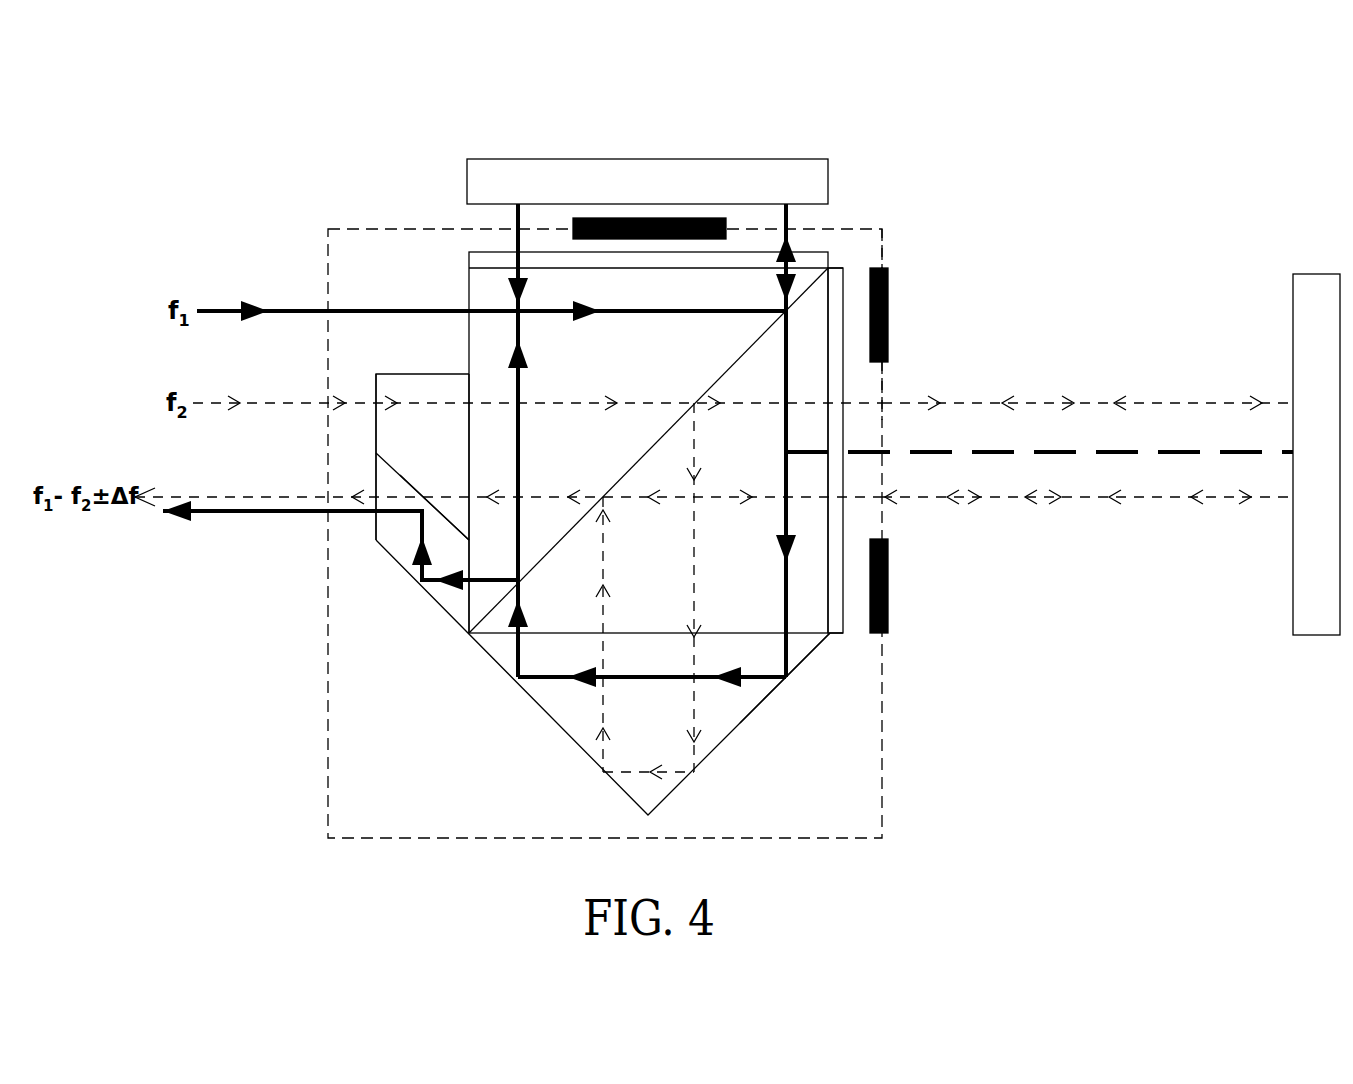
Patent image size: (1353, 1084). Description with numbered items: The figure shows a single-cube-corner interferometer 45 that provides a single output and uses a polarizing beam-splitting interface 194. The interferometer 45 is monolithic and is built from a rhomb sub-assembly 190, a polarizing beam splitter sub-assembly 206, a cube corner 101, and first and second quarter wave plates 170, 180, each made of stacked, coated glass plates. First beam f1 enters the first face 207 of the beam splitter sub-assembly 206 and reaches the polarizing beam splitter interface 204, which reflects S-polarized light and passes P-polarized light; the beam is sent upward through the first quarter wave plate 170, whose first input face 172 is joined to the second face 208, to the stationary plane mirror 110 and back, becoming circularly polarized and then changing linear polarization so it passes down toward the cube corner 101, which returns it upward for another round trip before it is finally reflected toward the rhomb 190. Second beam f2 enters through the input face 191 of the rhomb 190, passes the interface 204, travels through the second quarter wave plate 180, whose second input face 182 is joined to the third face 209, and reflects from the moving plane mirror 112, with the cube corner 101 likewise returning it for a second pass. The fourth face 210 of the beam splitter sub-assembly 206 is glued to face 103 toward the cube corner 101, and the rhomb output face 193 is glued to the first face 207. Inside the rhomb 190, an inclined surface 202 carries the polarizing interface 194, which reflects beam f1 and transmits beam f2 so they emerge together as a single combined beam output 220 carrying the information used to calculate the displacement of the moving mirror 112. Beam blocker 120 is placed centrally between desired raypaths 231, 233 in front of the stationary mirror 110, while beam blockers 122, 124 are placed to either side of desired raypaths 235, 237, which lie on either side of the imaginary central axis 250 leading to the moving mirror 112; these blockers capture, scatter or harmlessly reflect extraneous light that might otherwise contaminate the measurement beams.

The interferometer 45 is at (326, 280).
The cube corner 101 is at (573, 712).
The face 103 is at (630, 633).
The stationary plane mirror 110 is at (547, 177).
The moving plane mirror 112 is at (1293, 272).
The beam blocker 120 is at (667, 218).
The beam blocker 122 is at (888, 308).
The beam blocker 124 is at (888, 585).
The first quarter wave plate 170 is at (883, 229).
The first input face 172 is at (752, 270).
The second quarter wave plate 180 is at (840, 635).
The second input face 182 is at (830, 367).
The rhomb sub-assembly 190 is at (372, 365).
The input face 191 is at (376, 436).
The output face 193 is at (468, 475).
The polarizing beam-splitting interface 194 is at (445, 513).
The splitting surface 202 is at (398, 462).
The polarizing beam splitter interface 204 is at (722, 378).
The polarizing beam splitter sub-assembly 206 is at (540, 321).
The first face 207 is at (470, 383).
The second face 208 is at (597, 268).
The third face 209 is at (829, 592).
The fourth face 210 is at (662, 630).
The combined beam output 220 is at (240, 513).
The desired raypath 231 is at (517, 240).
The desired raypath 233 is at (787, 217).
The desired raypath 235 is at (1005, 403).
The desired raypath 237 is at (1045, 498).
The imaginary central axis 250 is at (1178, 451).